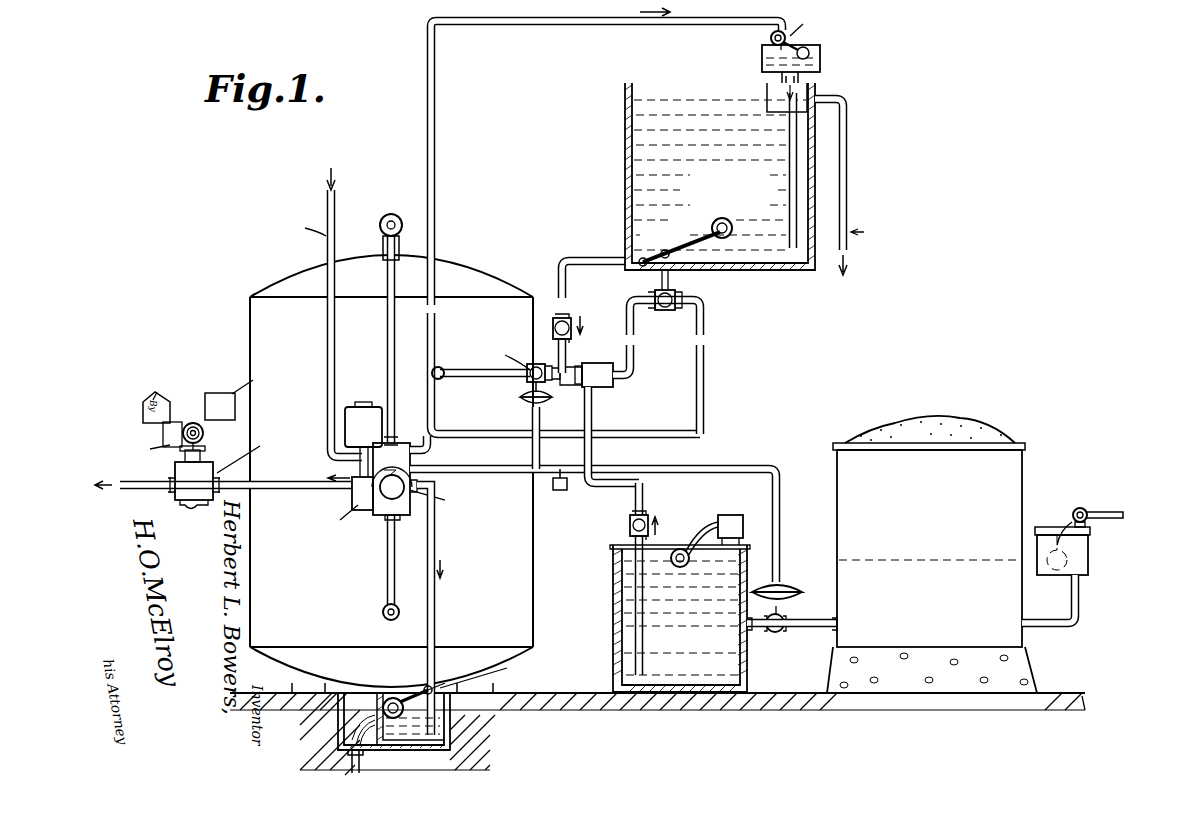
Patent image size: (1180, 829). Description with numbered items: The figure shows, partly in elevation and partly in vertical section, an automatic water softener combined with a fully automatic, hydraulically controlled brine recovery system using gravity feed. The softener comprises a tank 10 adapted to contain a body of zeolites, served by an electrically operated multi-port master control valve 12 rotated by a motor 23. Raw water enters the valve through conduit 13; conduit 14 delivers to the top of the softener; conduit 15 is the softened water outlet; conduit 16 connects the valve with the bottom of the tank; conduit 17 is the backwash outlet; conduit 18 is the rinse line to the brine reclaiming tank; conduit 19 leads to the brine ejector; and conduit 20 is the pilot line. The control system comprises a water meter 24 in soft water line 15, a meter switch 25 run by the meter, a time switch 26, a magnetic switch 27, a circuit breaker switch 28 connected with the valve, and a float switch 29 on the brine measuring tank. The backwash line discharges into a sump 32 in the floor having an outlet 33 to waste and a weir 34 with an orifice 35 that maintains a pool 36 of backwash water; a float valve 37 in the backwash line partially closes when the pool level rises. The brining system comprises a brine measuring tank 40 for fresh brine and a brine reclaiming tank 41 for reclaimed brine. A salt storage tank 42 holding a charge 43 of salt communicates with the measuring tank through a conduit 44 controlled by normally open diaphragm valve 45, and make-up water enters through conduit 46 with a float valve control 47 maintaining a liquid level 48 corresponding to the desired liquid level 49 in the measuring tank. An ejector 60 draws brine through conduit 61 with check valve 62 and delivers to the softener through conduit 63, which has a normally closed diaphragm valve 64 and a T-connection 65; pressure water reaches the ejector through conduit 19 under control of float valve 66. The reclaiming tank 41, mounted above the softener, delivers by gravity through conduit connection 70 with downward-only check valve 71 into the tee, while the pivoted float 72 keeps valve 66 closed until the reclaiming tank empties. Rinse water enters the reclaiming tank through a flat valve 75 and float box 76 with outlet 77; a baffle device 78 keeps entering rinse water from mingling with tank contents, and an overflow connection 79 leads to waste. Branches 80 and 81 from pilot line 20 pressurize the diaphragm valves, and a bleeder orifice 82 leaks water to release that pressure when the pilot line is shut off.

The tank 10 is at (478, 275).
The master control valve 12 is at (418, 450).
The conduit 13 is at (326, 252).
The conduit 14 is at (381, 280).
The conduit 15 is at (277, 482).
The conduit 16 is at (384, 585).
The conduit 17 is at (436, 574).
The conduit 18 is at (436, 412).
The conduit 19 is at (470, 437).
The conduit 20 is at (497, 476).
The motor 23 is at (362, 407).
The water meter 24 is at (206, 462).
The meter switch 25 is at (160, 435).
The time switch 26 is at (168, 408).
The magnetic switch 27 is at (215, 393).
The circuit breaker switch 28 is at (420, 484).
The float switch 29 is at (730, 517).
The sump 32 is at (440, 748).
The outlet 33 is at (362, 768).
The weir 34 is at (390, 697).
The orifice 35 is at (372, 712).
The pool 36 is at (450, 720).
The float valve 37 is at (435, 688).
The tank 40 is at (613, 588).
The tank 41 is at (620, 168).
The salt storage tank 42 is at (948, 539).
The charge 43 is at (986, 425).
The conduit 44 is at (800, 630).
The normally open diaphragm valve 45 is at (787, 582).
The conduit 46 is at (1122, 511).
The float valve control 47 is at (1090, 510).
The liquid level 48 is at (1080, 558).
The liquid level 49 is at (668, 552).
The ejector 60 is at (598, 366).
The conduit 61 is at (644, 498).
The check valve 62 is at (630, 530).
The conduit 63 is at (488, 382).
The normally closed diaphragm valve 64 is at (545, 404).
The T-connection 65 is at (553, 367).
The float valve 66 is at (680, 296).
The conduit connection 70 is at (588, 256).
The check valve 71 is at (1070, 693).
The pivoted float 72 is at (710, 227).
The flat valve 75 is at (770, 37).
The float box 76 is at (822, 62).
The outlet 77 is at (804, 77).
The baffle device 78 is at (806, 156).
The overflow connection 79 is at (850, 118).
The branch 80 is at (540, 462).
The branch 81 is at (705, 477).
The bleeder orifice 82 is at (552, 484).